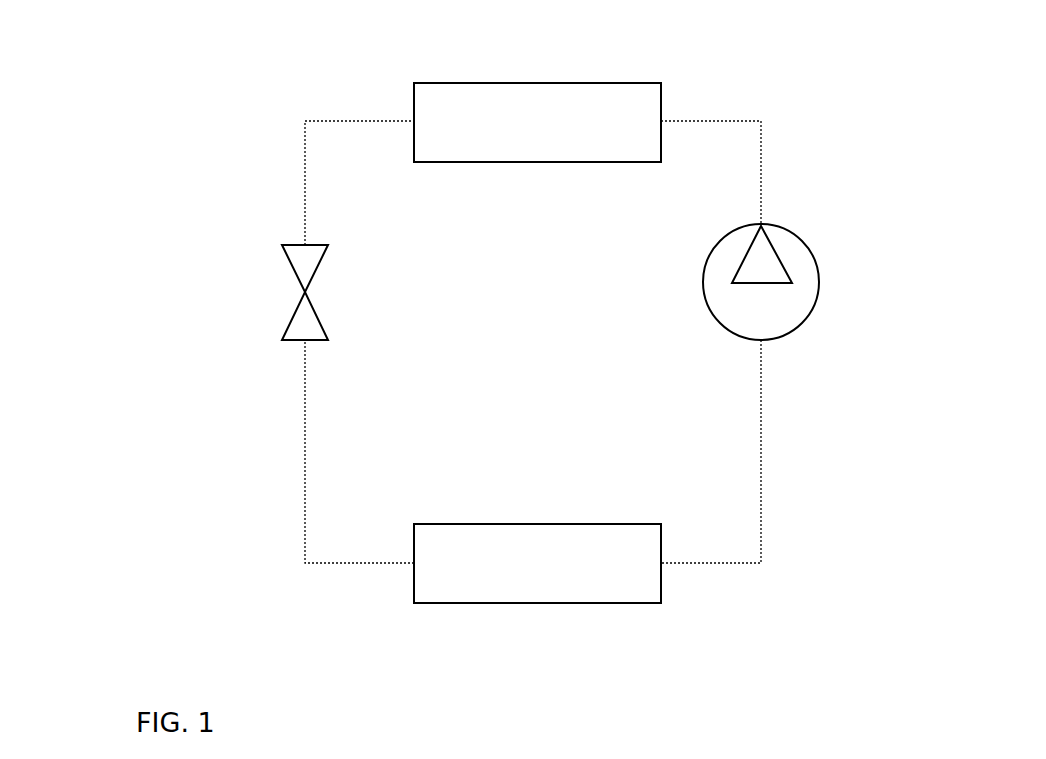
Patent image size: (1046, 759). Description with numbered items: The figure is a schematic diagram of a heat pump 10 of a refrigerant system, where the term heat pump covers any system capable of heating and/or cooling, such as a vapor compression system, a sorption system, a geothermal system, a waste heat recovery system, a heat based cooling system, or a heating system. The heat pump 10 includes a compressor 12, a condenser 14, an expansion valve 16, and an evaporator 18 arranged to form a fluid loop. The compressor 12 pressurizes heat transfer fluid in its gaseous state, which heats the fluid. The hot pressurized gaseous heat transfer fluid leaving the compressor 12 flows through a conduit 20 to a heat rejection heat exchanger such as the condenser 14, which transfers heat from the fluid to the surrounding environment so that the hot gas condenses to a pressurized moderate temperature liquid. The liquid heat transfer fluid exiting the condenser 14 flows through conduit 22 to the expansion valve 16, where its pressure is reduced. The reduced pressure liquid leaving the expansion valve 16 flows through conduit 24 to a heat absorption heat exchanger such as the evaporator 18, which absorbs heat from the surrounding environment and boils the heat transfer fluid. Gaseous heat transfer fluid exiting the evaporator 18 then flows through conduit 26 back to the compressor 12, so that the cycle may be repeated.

The heat pump 10 is at (155, 148).
The compressor 12 is at (765, 299).
The condenser 14 is at (537, 122).
The expansion valve 16 is at (292, 318).
The evaporator 18 is at (537, 563).
The conduit 20 is at (763, 157).
The conduit 22 is at (342, 125).
The conduit 24 is at (305, 463).
The conduit 26 is at (762, 414).